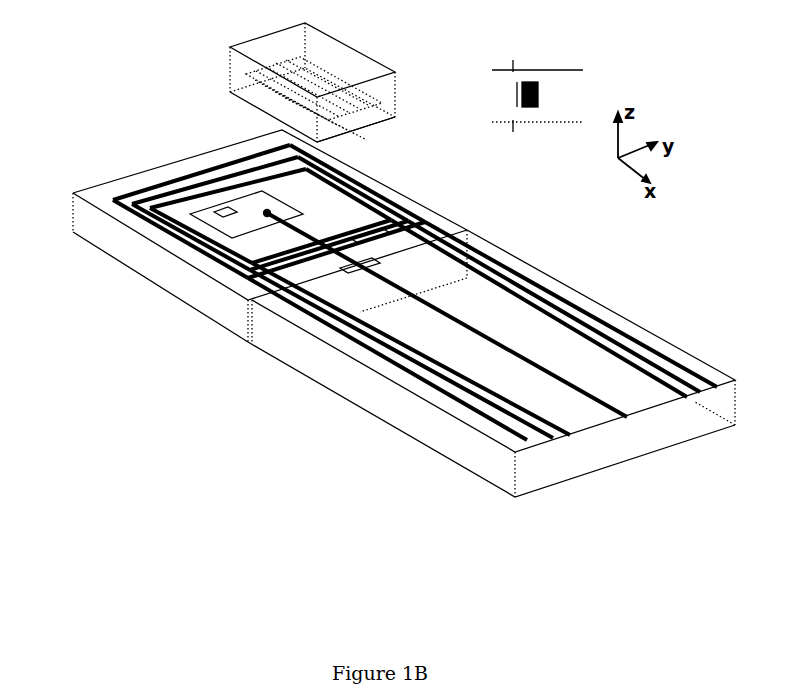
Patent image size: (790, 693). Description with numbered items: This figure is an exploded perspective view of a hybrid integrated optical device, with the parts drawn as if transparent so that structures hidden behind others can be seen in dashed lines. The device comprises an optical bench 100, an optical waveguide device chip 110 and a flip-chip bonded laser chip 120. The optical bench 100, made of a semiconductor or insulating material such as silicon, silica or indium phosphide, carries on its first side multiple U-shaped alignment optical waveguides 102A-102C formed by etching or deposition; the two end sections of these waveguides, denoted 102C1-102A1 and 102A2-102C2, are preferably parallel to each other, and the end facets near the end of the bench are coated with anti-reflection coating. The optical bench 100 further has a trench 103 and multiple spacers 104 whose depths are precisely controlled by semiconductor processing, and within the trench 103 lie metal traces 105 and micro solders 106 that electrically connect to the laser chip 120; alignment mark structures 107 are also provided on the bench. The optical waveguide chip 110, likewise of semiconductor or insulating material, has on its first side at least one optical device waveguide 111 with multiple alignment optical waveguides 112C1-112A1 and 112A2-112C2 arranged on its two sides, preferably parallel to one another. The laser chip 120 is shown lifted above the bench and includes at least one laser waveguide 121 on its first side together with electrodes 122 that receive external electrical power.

The optical bench 100 is at (97, 193).
The optical waveguide device chip 110 is at (600, 317).
The optical device waveguide 111 is at (567, 380).
The flip-chip bonded laser chip 120 is at (267, 45).
The laser waveguide 121 is at (353, 131).
The electrodes 122 is at (268, 98).
The U-shaped alignment optical waveguides 102A-102C is at (187, 168).
The end sections of the U-shaped alignment optical waveguides 102A2-102C2 is at (172, 207).
The end sections of the U-shaped alignment optical waveguides 102C1-102A1 is at (345, 195).
The alignment optical waveguides 112A2-112C2 is at (410, 338).
The alignment optical waveguides 112C1-112A1 is at (505, 292).
The trench 103 is at (287, 228).
The spacers 104 is at (358, 262).
The metal traces 105 is at (223, 212).
The micro solders 106 is at (362, 236).
The alignment mark structures 107 is at (517, 94).